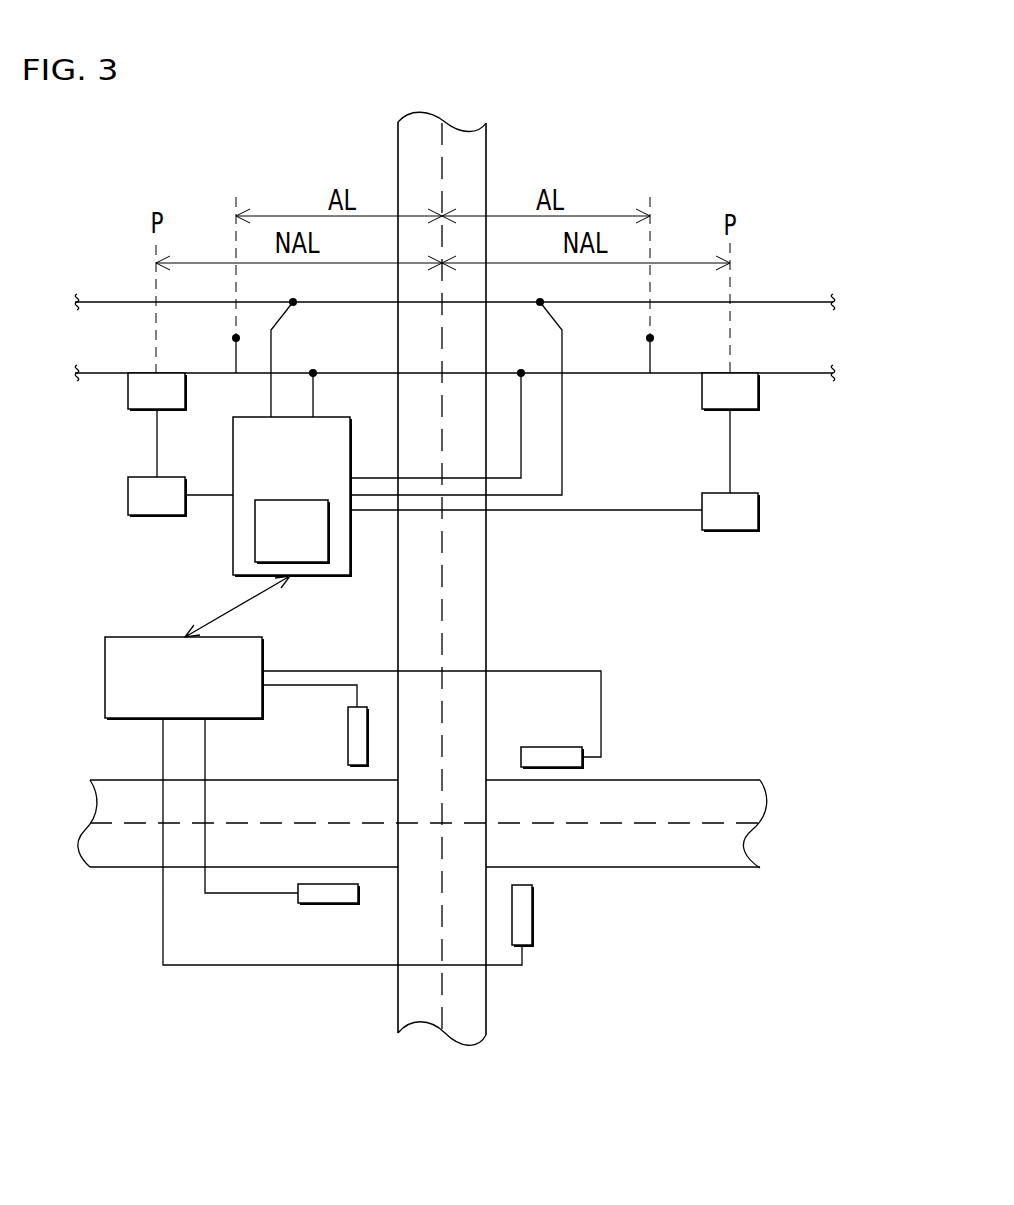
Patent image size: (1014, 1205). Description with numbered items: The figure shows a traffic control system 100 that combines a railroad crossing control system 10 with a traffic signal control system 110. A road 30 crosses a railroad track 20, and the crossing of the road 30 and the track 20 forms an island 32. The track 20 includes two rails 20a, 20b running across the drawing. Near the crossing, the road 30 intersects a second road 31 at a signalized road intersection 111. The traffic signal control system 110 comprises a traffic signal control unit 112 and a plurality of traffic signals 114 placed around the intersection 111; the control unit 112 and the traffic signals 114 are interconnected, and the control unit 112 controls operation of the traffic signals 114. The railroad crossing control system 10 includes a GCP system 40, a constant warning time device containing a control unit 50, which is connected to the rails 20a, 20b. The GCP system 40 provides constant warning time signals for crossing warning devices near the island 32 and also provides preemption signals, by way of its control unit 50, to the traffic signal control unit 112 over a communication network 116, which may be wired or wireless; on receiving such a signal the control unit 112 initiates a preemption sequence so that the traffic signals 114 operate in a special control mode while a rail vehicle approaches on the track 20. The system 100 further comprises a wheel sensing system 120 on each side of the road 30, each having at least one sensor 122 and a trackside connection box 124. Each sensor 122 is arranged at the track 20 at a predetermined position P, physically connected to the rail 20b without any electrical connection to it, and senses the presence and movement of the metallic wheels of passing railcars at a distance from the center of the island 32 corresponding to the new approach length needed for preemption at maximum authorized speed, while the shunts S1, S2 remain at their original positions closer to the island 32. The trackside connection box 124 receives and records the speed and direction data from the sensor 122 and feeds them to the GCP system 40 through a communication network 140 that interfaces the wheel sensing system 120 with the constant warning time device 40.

The traffic control system 100 is at (741, 118).
The railroad crossing control system 10 is at (529, 572).
The railroad track 20 is at (838, 376).
The rail 20a is at (806, 301).
The rail 20b is at (808, 372).
The road 30 is at (470, 556).
The road 31 is at (657, 790).
The island 32 is at (449, 352).
The GCP system 40 is at (322, 576).
The control unit 50 is at (308, 548).
The traffic signal control system 110 is at (313, 1000).
The signalized road intersection 111 is at (493, 815).
The traffic signal control unit 112 is at (105, 672).
The traffic signals 114 is at (348, 735).
The communication network 116 is at (230, 611).
The wheel sensing system 120 is at (93, 449).
The sensor 122 is at (128, 393).
The trackside connection box 124 is at (128, 512).
The communication network 140 is at (209, 497).
The shunt S1 is at (233, 338).
The shunt S2 is at (648, 338).